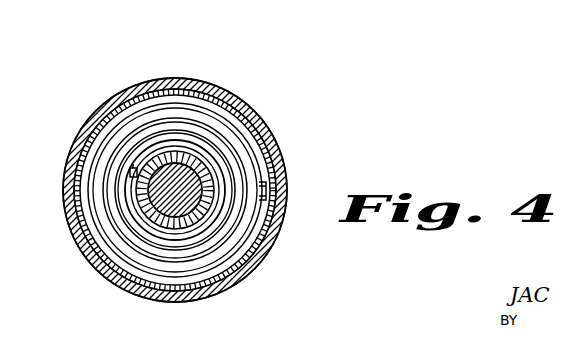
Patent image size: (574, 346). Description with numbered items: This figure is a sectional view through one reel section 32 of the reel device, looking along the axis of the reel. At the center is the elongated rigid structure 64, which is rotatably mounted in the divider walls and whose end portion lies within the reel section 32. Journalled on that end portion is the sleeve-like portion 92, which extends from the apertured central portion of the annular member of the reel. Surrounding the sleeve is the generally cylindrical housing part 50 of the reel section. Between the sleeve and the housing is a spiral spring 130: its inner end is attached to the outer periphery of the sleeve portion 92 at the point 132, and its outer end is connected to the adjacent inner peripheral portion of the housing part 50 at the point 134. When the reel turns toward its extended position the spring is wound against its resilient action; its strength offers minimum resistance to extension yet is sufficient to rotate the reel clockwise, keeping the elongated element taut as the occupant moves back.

The reel section 32 is at (192, 77).
The cylindrical housing part 50 is at (110, 118).
The spiral spring 130 is at (193, 110).
The elongated rigid structure 64 is at (210, 167).
The outer end connection of spiral spring 134 is at (289, 173).
The inner end attachment of spiral spring 132 is at (135, 177).
The sleeve-like portion 92 is at (150, 212).